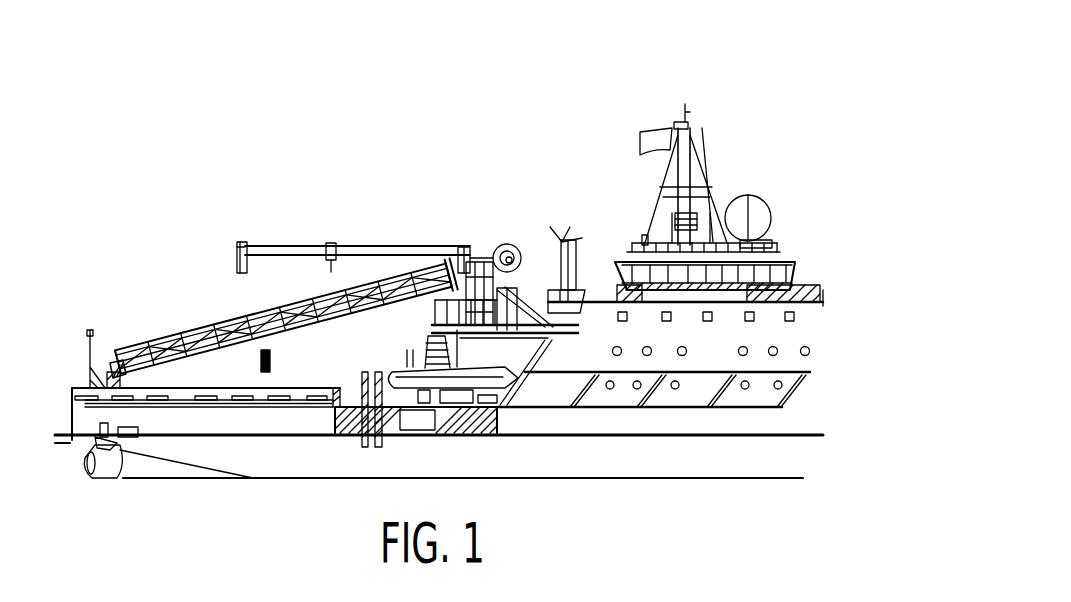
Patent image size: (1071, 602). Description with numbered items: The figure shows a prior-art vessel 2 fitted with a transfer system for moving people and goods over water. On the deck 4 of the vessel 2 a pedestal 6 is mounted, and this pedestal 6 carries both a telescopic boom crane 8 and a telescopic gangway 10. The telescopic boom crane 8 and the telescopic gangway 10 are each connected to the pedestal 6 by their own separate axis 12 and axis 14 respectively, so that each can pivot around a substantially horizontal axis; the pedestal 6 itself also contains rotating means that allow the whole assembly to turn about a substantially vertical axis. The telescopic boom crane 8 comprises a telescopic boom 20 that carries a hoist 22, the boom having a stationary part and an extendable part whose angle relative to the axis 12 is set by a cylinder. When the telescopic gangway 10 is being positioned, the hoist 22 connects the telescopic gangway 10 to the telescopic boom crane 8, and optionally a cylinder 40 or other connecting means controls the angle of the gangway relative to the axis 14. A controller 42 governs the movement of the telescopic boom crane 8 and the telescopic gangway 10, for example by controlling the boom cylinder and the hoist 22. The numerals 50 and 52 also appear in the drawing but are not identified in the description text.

The vessel 2 is at (753, 96).
The deck 4 is at (263, 362).
The pedestal 6 is at (386, 349).
The telescopic boom crane 8 is at (499, 208).
The telescopic gangway 10 is at (167, 289).
The axis 12 is at (493, 242).
The axis 14 is at (386, 327).
The telescopic boom 20 is at (361, 208).
The hoist 22 is at (288, 266).
The cylinder 40 is at (557, 234).
The controller 42 is at (434, 207).
The superstructure 50 is at (589, 147).
The wheelhouse 52 is at (623, 138).